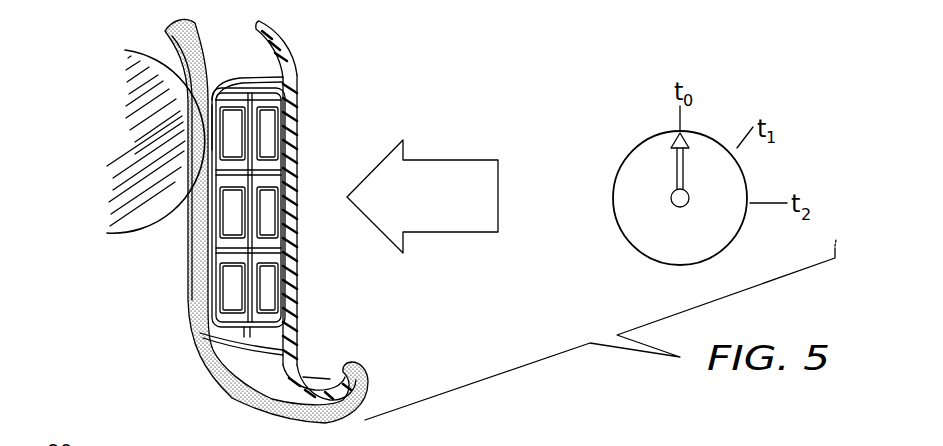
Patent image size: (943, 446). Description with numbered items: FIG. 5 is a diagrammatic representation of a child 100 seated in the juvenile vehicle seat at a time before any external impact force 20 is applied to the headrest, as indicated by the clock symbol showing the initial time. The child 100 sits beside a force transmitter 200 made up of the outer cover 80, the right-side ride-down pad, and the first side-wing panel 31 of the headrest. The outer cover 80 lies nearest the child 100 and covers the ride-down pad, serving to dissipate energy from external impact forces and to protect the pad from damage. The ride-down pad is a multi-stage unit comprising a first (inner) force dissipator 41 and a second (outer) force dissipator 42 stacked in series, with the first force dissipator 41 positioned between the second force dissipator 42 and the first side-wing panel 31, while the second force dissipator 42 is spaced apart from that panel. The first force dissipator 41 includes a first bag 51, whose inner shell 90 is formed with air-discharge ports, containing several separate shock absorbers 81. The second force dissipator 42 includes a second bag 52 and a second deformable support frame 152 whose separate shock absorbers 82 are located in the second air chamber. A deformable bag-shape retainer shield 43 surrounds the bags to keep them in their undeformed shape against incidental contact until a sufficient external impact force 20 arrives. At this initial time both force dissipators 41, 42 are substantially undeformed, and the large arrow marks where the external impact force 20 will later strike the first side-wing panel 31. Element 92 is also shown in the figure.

The external impact force 20 is at (455, 163).
The first side-wing panel 31 is at (299, 357).
The first (inner) force dissipator 41 is at (284, 66).
The second (outer) force dissipator 42 is at (242, 76).
The deformable bag-shape retainer shield 43 is at (244, 356).
The first bag 51 is at (289, 108).
The second bag 52 is at (209, 128).
The outer cover 80 is at (160, 21).
The shock absorbers 81 is at (290, 172).
The shock absorbers 82 is at (234, 163).
The inner shell 90 is at (298, 336).
The lower lip 92 is at (199, 336).
The child 100 is at (138, 68).
The second deformable support frame 152 is at (232, 248).
The force transmitter 200 is at (177, 244).